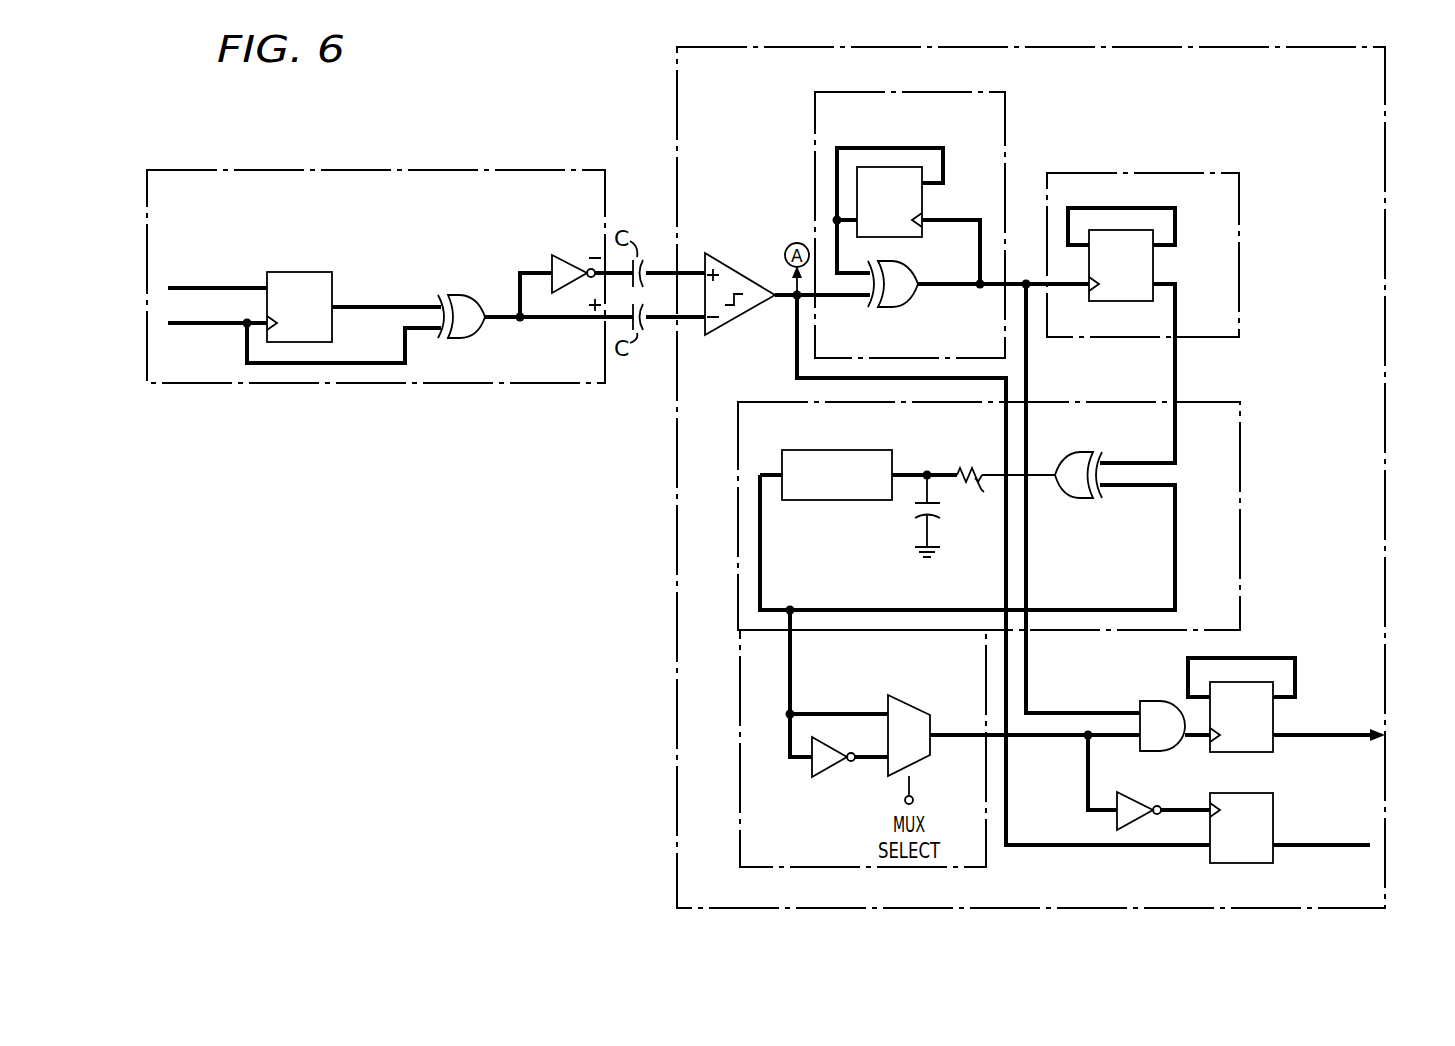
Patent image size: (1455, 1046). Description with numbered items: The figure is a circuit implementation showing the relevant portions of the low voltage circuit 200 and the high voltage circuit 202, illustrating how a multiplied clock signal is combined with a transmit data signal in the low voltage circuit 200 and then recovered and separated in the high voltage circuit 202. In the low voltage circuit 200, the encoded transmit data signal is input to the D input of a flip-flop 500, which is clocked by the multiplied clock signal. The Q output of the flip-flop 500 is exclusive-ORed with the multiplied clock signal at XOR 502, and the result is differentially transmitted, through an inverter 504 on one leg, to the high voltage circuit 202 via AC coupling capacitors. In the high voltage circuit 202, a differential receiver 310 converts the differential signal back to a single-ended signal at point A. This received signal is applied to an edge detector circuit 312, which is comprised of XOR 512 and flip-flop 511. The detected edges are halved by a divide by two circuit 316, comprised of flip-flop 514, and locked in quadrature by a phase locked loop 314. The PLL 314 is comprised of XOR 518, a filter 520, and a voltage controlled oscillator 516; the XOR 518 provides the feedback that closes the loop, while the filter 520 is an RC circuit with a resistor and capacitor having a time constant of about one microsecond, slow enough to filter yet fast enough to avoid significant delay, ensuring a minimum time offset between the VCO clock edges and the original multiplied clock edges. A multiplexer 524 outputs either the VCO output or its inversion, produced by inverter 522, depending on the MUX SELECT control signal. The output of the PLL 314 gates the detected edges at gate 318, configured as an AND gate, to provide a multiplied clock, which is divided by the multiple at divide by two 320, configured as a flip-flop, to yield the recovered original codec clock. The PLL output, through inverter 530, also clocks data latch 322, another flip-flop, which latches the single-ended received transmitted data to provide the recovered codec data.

The low voltage circuit 200 is at (437, 170).
The high voltage circuit 202 is at (1385, 408).
The differential receiver 310 is at (745, 318).
The edge detector circuit 312 is at (1005, 118).
The phase locked loop 314 is at (1240, 470).
The divide by two circuit 316 is at (1143, 173).
The gate 318 is at (1150, 698).
The divide by two 320 is at (1245, 752).
The data latch 322 is at (1245, 863).
The flip-flop 500 is at (314, 273).
The XOR 502 is at (478, 295).
The inverter 504 is at (568, 255).
The flip-flop 511 is at (891, 166).
The XOR 512 is at (905, 264).
The flip-flop 514 is at (1153, 262).
The voltage controlled oscillator 516 is at (840, 450).
The XOR 518 is at (1072, 455).
The filter 520 is at (945, 512).
The inverter 522 is at (830, 768).
The multiplexer 524 is at (912, 706).
The inverter 530 is at (1138, 800).